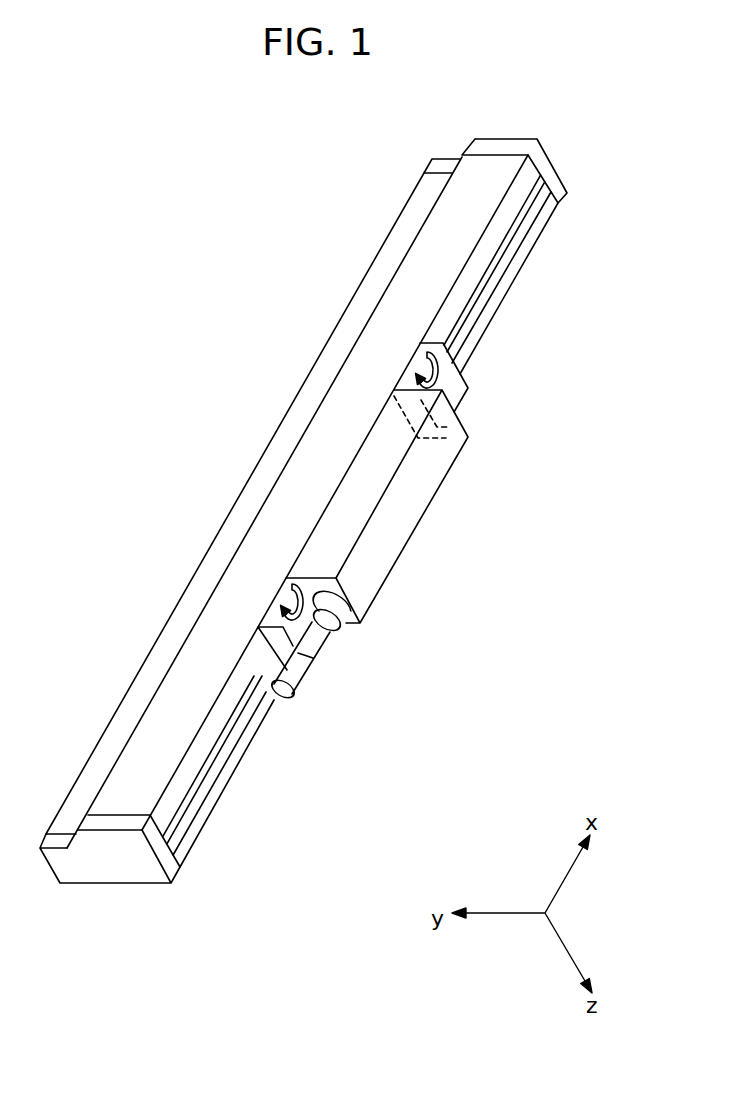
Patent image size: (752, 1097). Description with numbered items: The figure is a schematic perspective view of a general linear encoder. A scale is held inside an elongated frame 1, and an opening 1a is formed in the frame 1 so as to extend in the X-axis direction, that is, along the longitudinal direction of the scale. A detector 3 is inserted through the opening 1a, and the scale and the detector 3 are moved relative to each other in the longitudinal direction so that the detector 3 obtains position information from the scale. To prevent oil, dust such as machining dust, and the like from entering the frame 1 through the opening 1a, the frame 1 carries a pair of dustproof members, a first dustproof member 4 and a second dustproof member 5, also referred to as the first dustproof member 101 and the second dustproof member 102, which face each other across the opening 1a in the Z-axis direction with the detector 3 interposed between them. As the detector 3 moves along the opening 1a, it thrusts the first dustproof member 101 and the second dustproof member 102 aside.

The frame 1 is at (337, 511).
The opening 1a is at (399, 510).
The detector 3 is at (417, 493).
The first dustproof member 101 is at (401, 518).
The second dustproof member 102 is at (352, 495).
The first dustproof member 4 is at (467, 320).
The second dustproof member 5 is at (477, 293).